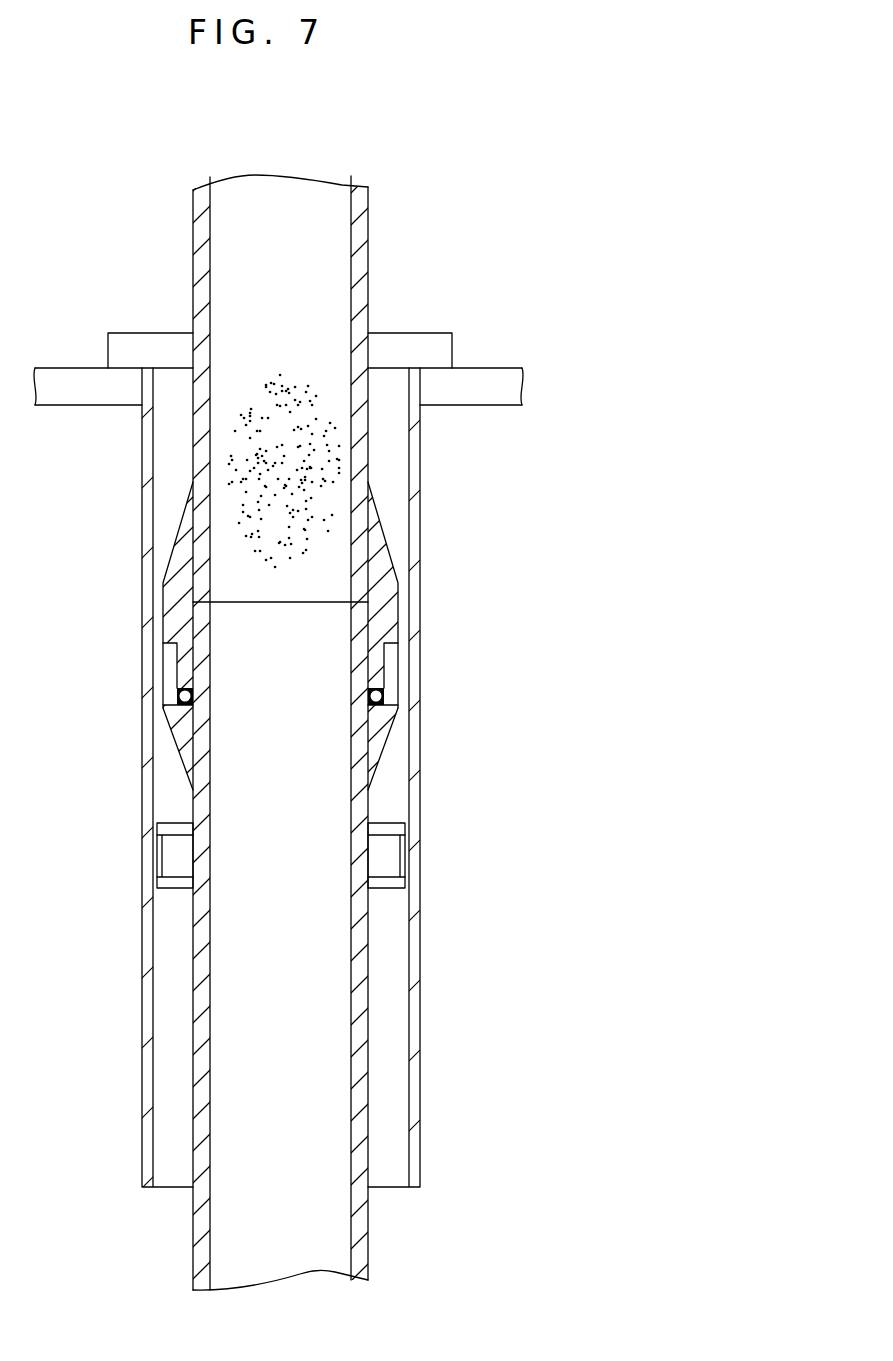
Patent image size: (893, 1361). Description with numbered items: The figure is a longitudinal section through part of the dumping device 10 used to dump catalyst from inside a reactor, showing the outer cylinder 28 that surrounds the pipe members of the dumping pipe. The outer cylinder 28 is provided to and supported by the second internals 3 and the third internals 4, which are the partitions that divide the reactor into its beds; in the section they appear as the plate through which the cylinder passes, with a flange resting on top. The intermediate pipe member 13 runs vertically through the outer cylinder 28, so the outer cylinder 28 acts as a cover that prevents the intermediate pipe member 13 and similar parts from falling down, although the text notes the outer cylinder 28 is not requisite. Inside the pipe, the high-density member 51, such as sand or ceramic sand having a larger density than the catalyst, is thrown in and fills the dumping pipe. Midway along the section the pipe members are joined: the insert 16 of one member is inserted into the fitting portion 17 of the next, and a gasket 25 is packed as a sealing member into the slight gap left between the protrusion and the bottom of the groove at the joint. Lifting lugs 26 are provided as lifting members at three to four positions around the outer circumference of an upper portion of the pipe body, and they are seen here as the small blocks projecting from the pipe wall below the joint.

The dumping device 10 is at (393, 172).
The intermediate pipe member 13 is at (365, 228).
The second internals 3 is at (329, 341).
The third internals 4 is at (490, 372).
The high-density member 51 is at (320, 464).
The insert 16 is at (400, 615).
The gasket 25 is at (384, 696).
The fitting portion 17 is at (384, 756).
The lifting lug 26 is at (393, 852).
The outer cylinder 28 is at (420, 976).